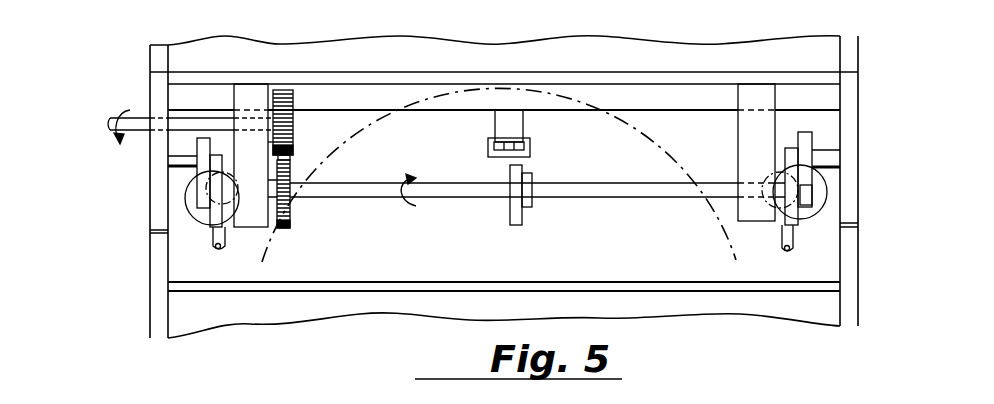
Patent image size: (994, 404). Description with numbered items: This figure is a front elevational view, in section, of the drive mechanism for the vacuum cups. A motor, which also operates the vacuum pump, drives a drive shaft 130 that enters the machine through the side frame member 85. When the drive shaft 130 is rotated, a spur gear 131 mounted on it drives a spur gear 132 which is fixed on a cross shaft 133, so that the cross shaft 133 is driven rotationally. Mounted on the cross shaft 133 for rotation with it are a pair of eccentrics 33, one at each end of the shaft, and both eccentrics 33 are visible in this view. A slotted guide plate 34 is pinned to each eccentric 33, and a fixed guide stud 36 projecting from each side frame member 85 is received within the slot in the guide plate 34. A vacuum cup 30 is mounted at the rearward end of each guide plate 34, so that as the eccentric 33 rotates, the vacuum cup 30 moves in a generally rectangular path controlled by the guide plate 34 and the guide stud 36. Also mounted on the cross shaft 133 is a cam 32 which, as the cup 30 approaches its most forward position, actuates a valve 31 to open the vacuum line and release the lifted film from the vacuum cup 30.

The side frame member 85 is at (158, 200).
The drive shaft 130 is at (116, 116).
The spur gear 131 is at (293, 135).
The spur gear 132 is at (291, 174).
The cross shaft 133 is at (377, 188).
The valve 31 is at (530, 143).
The cam 32 is at (512, 208).
The eccentric 33 is at (213, 217).
The slotted guide plate 34 is at (199, 200).
The fixed guide stud 36 is at (173, 160).
The vacuum cup 30 is at (208, 228).